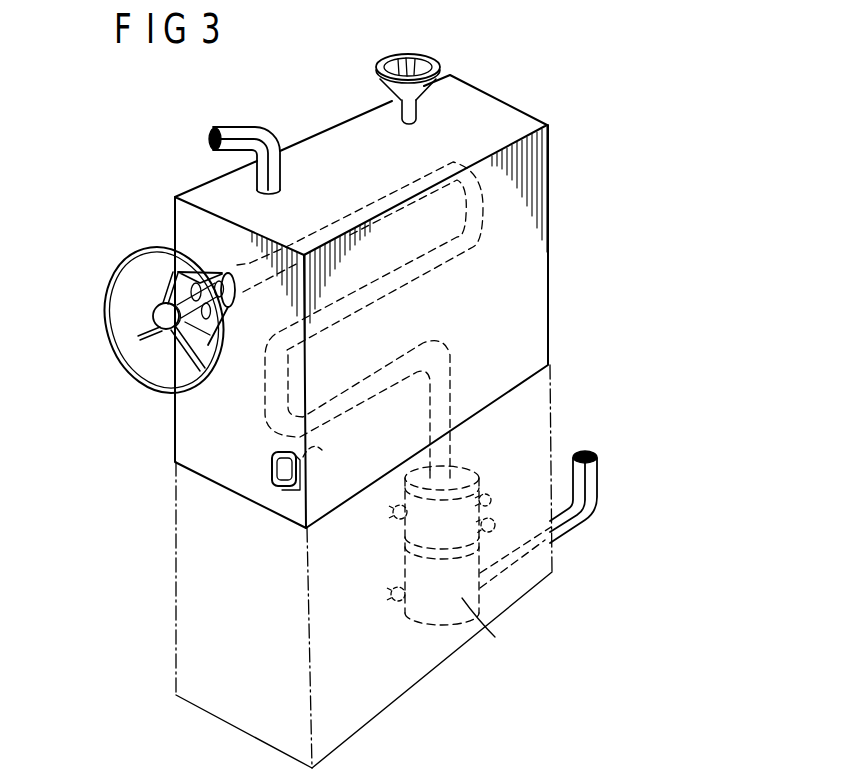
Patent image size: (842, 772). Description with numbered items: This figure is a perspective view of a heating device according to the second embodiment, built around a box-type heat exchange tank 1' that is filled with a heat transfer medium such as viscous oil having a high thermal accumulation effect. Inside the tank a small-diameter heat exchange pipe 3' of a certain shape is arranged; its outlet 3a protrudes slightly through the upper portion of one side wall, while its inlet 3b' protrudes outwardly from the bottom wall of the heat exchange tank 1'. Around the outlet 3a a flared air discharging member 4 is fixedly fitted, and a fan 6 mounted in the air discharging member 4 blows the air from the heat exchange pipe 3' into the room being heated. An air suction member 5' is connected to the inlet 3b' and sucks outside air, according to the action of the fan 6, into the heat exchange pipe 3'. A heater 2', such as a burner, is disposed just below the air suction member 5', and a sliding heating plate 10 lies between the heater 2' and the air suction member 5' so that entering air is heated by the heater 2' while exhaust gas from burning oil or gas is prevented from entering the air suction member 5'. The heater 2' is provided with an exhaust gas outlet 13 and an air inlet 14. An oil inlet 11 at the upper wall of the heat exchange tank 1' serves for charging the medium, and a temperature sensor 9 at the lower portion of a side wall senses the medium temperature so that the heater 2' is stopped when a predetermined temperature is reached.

The heat exchange tank 1' is at (363, 408).
The oil inlet 11 is at (440, 62).
The outlet 3a is at (213, 276).
The air discharging member 4 is at (133, 297).
The fan 6 is at (150, 373).
The heat exchange pipe 3' is at (420, 316).
The inlet 3b' is at (507, 430).
The air suction member 5' is at (570, 446).
The exhaust gas outlet 13 is at (597, 487).
The sliding heating plate 10 is at (494, 530).
The heater 2' is at (490, 568).
The temperature sensor 9 is at (281, 484).
The air inlet 14 is at (398, 592).